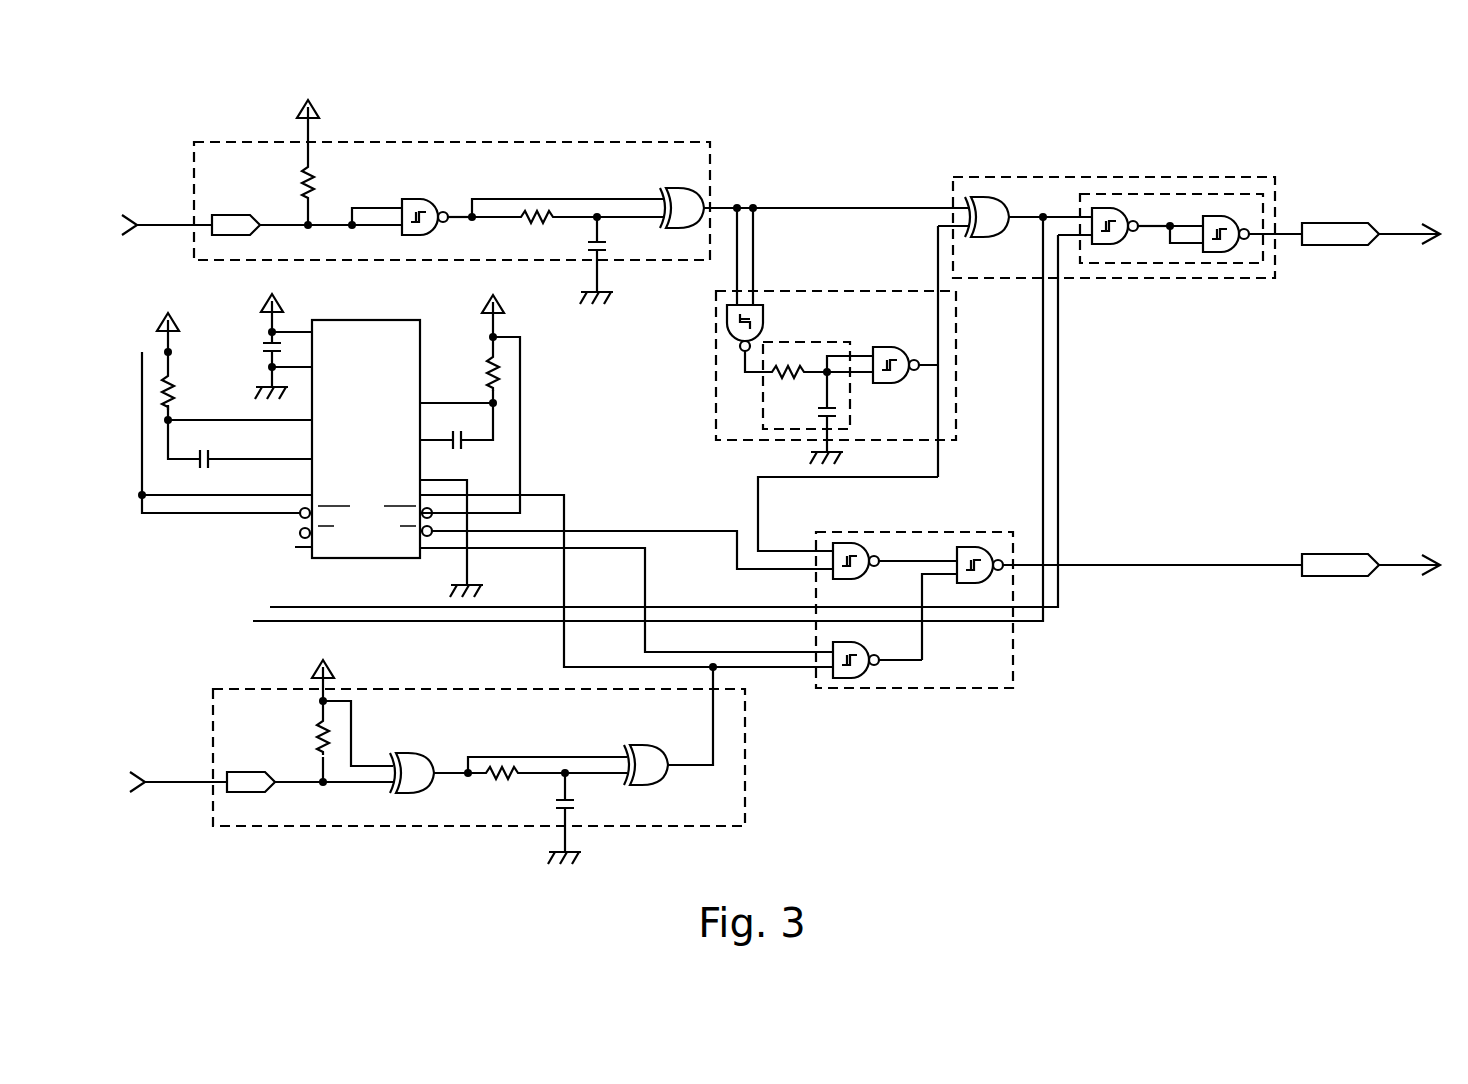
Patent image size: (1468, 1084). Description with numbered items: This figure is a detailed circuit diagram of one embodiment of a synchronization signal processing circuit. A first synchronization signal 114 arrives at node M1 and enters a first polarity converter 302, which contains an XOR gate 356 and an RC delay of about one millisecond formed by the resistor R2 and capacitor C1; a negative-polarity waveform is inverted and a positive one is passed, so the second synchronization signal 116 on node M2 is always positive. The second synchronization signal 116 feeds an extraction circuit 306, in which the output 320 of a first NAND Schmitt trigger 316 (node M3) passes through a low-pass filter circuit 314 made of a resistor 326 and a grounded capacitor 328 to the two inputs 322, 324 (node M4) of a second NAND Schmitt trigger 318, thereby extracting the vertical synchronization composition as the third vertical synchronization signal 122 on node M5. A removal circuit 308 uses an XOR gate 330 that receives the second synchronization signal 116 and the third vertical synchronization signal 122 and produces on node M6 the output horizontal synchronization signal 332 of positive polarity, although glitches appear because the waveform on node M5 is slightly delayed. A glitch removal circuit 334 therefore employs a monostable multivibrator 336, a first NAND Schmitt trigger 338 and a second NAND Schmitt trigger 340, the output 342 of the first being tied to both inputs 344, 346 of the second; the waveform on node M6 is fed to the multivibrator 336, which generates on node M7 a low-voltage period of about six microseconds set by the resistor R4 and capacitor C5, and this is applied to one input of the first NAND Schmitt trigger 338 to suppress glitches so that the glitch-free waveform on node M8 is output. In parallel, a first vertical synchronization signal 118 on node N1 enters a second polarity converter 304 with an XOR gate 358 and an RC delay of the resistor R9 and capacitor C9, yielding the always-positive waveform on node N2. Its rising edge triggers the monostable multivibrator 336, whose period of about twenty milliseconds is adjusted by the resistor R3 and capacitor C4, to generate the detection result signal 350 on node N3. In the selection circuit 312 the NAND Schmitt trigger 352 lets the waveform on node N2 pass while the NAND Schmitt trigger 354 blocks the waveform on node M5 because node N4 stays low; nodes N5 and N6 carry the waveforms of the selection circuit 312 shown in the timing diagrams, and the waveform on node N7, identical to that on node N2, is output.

The first polarity converter 302 is at (633, 142).
The first synchronization signal 114 is at (140, 223).
The node M1 is at (160, 224).
The resistor R2 is at (530, 217).
The capacitor C1 is at (605, 250).
The XOR gate 356 is at (683, 205).
The second synchronization signal 116 is at (722, 208).
The node M2 is at (838, 208).
The extraction circuit 306 is at (956, 385).
The third vertical synchronization signal 122 is at (956, 432).
The node M5 is at (956, 328).
The first NAND Schmitt trigger 316 is at (728, 312).
The output of first NAND Schmitt trigger 320 is at (740, 358).
The node M3 is at (740, 372).
The low-pass filter circuit 314 is at (763, 395).
The resistor 326 is at (788, 365).
The input of second NAND Schmitt trigger 322 is at (838, 356).
The node M4 is at (866, 355).
The input of second NAND Schmitt trigger 324 is at (858, 375).
The capacitor 328 is at (820, 430).
The second NAND Schmitt trigger 318 is at (895, 350).
The removal circuit 308 is at (1265, 177).
The XOR gate 330 is at (988, 200).
The node M6 is at (1030, 216).
The glitch removal circuit 334 is at (1240, 263).
The first NAND Schmitt trigger 338 is at (1108, 208).
The node M7 is at (1058, 430).
The output of first NAND Schmitt trigger 342 is at (1158, 228).
The input of second NAND Schmitt trigger 344 is at (1180, 225).
The input of second NAND Schmitt trigger 346 is at (1180, 245).
The second NAND Schmitt trigger 340 is at (1218, 215).
The output horizontal synchronization signal 332 is at (1288, 233).
The node M8 is at (1395, 233).
The monostable multivibrator 336 is at (385, 330).
The resistor R4 is at (234, 368).
The capacitor C5 is at (240, 444).
The resistor R3 is at (470, 404).
The capacitor C4 is at (456, 426).
The node N4 is at (628, 531).
The detection result signal 350 is at (646, 600).
The node N3 is at (646, 630).
The selection circuit 312 is at (1013, 650).
The NAND Schmitt trigger 354 is at (850, 543).
The NAND Schmitt trigger 352 is at (848, 678).
The node N5 is at (922, 638).
The node N6 is at (935, 561).
The node N7 is at (1160, 565).
The second polarity converter 304 is at (745, 803).
The first vertical synchronization signal 118 is at (150, 781).
The node N1 is at (178, 782).
The XOR gate 358 is at (416, 765).
The resistor R9 is at (512, 773).
The capacitor C9 is at (575, 803).
The node N2 is at (713, 718).